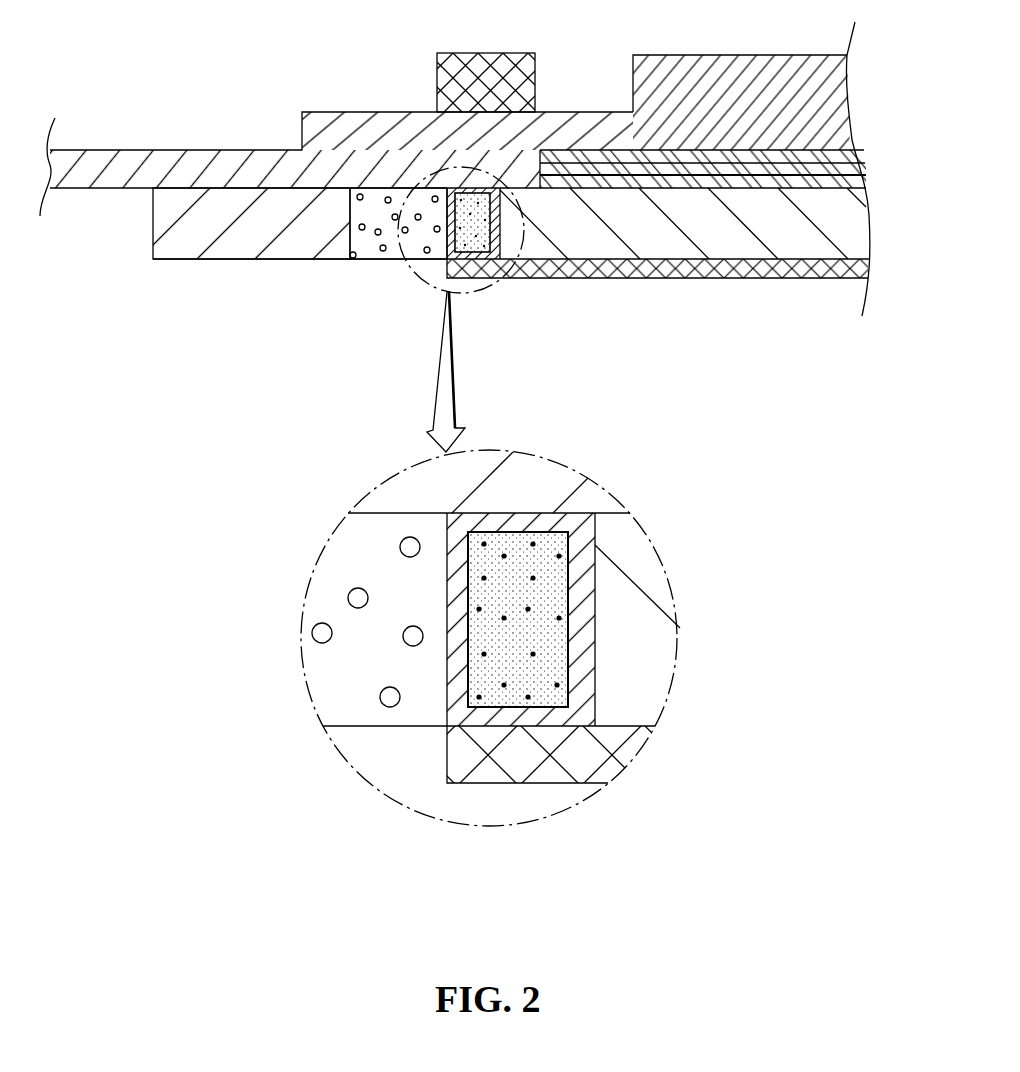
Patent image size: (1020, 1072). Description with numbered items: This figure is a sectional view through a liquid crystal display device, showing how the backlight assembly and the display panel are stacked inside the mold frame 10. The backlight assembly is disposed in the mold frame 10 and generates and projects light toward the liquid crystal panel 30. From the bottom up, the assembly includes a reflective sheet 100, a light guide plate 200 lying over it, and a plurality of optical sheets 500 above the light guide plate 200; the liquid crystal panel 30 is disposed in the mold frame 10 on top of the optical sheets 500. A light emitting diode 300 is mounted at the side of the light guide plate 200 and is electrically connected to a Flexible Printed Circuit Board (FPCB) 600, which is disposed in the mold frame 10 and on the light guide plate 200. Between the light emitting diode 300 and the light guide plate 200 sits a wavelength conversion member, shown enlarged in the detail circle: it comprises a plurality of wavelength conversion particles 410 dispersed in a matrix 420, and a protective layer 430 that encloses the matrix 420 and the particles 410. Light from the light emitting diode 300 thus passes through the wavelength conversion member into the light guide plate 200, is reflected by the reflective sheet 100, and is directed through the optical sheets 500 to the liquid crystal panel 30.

The mold frame 10 is at (206, 238).
The liquid crystal panel 30 is at (735, 70).
The reflective sheet 100 is at (557, 262).
The light guide plate 200 is at (655, 237).
The light emitting diode 300 is at (371, 245).
The wavelength conversion particles 410 is at (483, 653).
The matrix 420 is at (490, 675).
The protective layer 430 is at (560, 713).
The optical sheets 500 is at (745, 173).
The Flexible Printed Circuit Board (FPCB) 600 is at (210, 160).